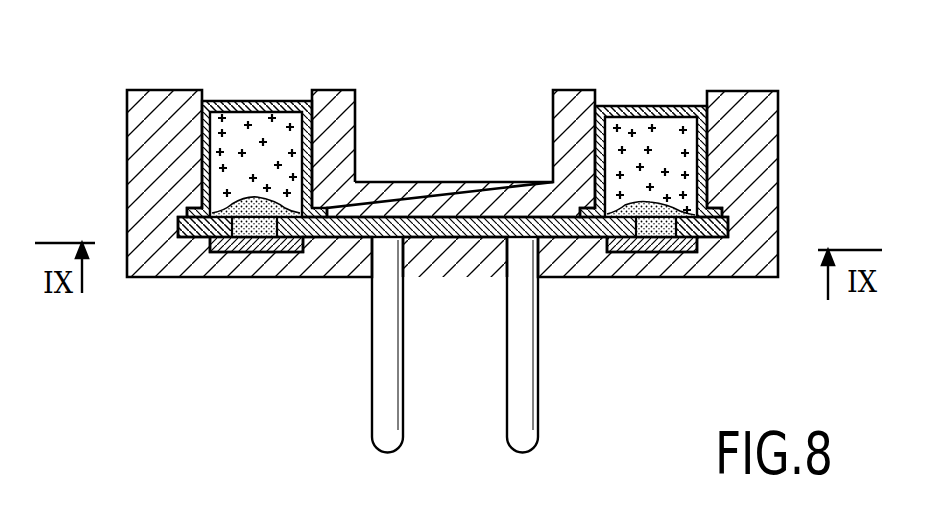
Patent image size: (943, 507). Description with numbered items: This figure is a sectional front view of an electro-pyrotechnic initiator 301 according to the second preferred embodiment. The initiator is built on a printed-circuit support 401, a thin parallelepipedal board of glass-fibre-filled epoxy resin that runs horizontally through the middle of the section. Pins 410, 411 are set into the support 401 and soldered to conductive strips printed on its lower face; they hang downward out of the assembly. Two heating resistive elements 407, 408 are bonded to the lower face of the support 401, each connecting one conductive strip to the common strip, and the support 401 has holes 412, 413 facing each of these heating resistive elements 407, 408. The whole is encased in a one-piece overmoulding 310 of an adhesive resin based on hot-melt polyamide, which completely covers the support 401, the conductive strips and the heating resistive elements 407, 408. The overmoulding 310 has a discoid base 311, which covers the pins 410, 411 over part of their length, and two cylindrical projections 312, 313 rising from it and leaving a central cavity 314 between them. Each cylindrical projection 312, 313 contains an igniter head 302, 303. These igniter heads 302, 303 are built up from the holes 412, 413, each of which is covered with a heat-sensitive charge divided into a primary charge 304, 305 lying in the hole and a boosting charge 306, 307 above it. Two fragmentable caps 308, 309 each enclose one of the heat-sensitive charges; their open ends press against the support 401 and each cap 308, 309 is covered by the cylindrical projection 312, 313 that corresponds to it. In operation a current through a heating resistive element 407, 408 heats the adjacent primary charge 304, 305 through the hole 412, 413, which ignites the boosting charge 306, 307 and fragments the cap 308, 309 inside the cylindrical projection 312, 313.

The electro-pyrotechnic initiator 301 is at (290, 360).
The igniter head 302 is at (722, 162).
The igniter head 303 is at (188, 157).
The primary charge 304 is at (663, 239).
The primary charge 305 is at (259, 238).
The boosting charge 306 is at (667, 148).
The boosting charge 307 is at (266, 130).
The fragmentable cap 308 is at (633, 106).
The fragmentable cap 309 is at (228, 101).
The overmoulding 310 is at (336, 78).
The discoid base 311 is at (562, 262).
The cylindrical projection 312 is at (752, 103).
The cylindrical projection 313 is at (155, 99).
The central cavity 314 is at (462, 181).
The printed-circuit support 401 is at (443, 239).
The heating resistive element 407 is at (217, 240).
The heating resistive element 408 is at (692, 250).
The pin 410 is at (538, 437).
The pin 411 is at (373, 424).
The hole 412 is at (640, 251).
The hole 413 is at (307, 250).